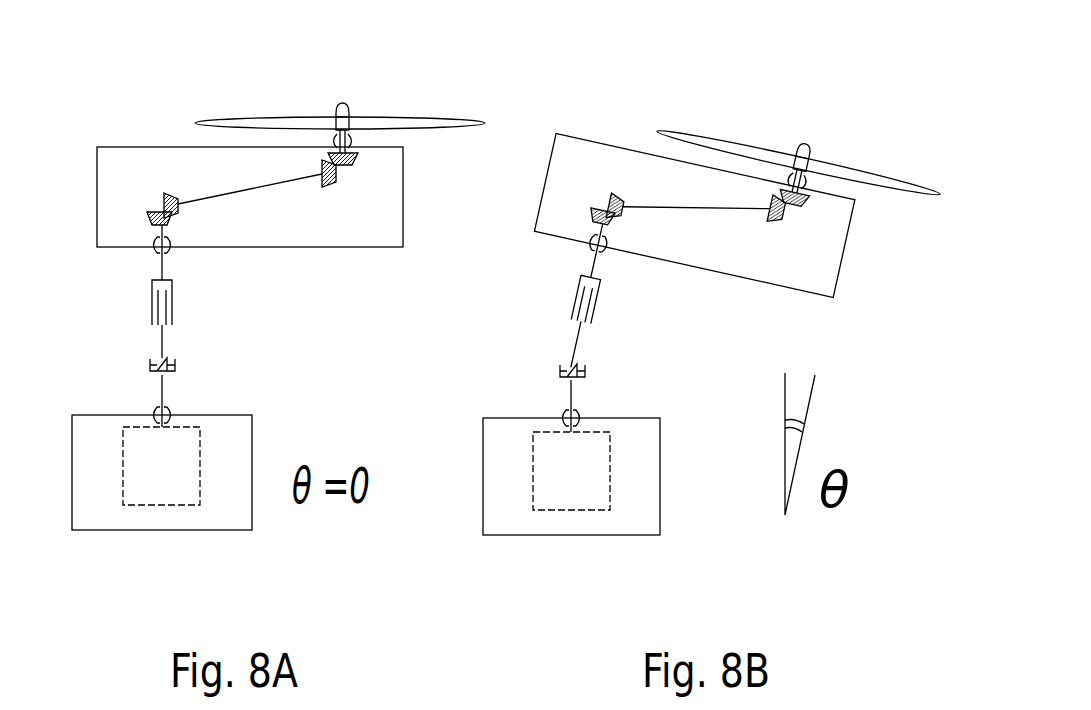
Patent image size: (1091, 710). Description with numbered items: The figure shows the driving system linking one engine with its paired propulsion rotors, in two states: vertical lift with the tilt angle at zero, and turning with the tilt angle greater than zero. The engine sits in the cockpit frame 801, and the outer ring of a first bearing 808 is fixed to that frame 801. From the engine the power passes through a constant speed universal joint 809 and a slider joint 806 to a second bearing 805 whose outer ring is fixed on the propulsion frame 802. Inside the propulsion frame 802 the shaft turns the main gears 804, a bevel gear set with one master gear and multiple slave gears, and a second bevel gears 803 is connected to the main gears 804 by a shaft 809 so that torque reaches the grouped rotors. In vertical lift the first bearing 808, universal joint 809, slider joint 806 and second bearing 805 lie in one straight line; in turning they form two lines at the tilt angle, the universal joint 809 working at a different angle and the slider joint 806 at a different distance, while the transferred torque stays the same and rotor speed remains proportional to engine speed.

In FIG. 8A, the cockpit frame 801 is at (230, 533).
In FIG. 8B, the cockpit frame 801 is at (647, 535).
In FIG. 8A, the propulsion frame 802 is at (175, 143).
In FIG. 8B, the propulsion frame 802 is at (603, 133).
In FIG. 8A, the second bevel gears 803 is at (352, 170).
In FIG. 8B, the second bevel gears 803 is at (797, 212).
In FIG. 8A, the main gears 804 is at (155, 202).
In FIG. 8B, the main gears 804 is at (603, 203).
In FIG. 8A, the second bearing 805 is at (147, 252).
In FIG. 8B, the second bearing 805 is at (577, 255).
In FIG. 8A, the slider joint 806 is at (180, 295).
In FIG. 8B, the slider joint 806 is at (565, 300).
In FIG. 8A, the first bearing 808 is at (145, 397).
In FIG. 8B, the first bearing 808 is at (548, 410).
In FIG. 8A, the constant speed universal joint 809 is at (238, 203).
In FIG. 8B, the constant speed universal joint 809 is at (665, 217).